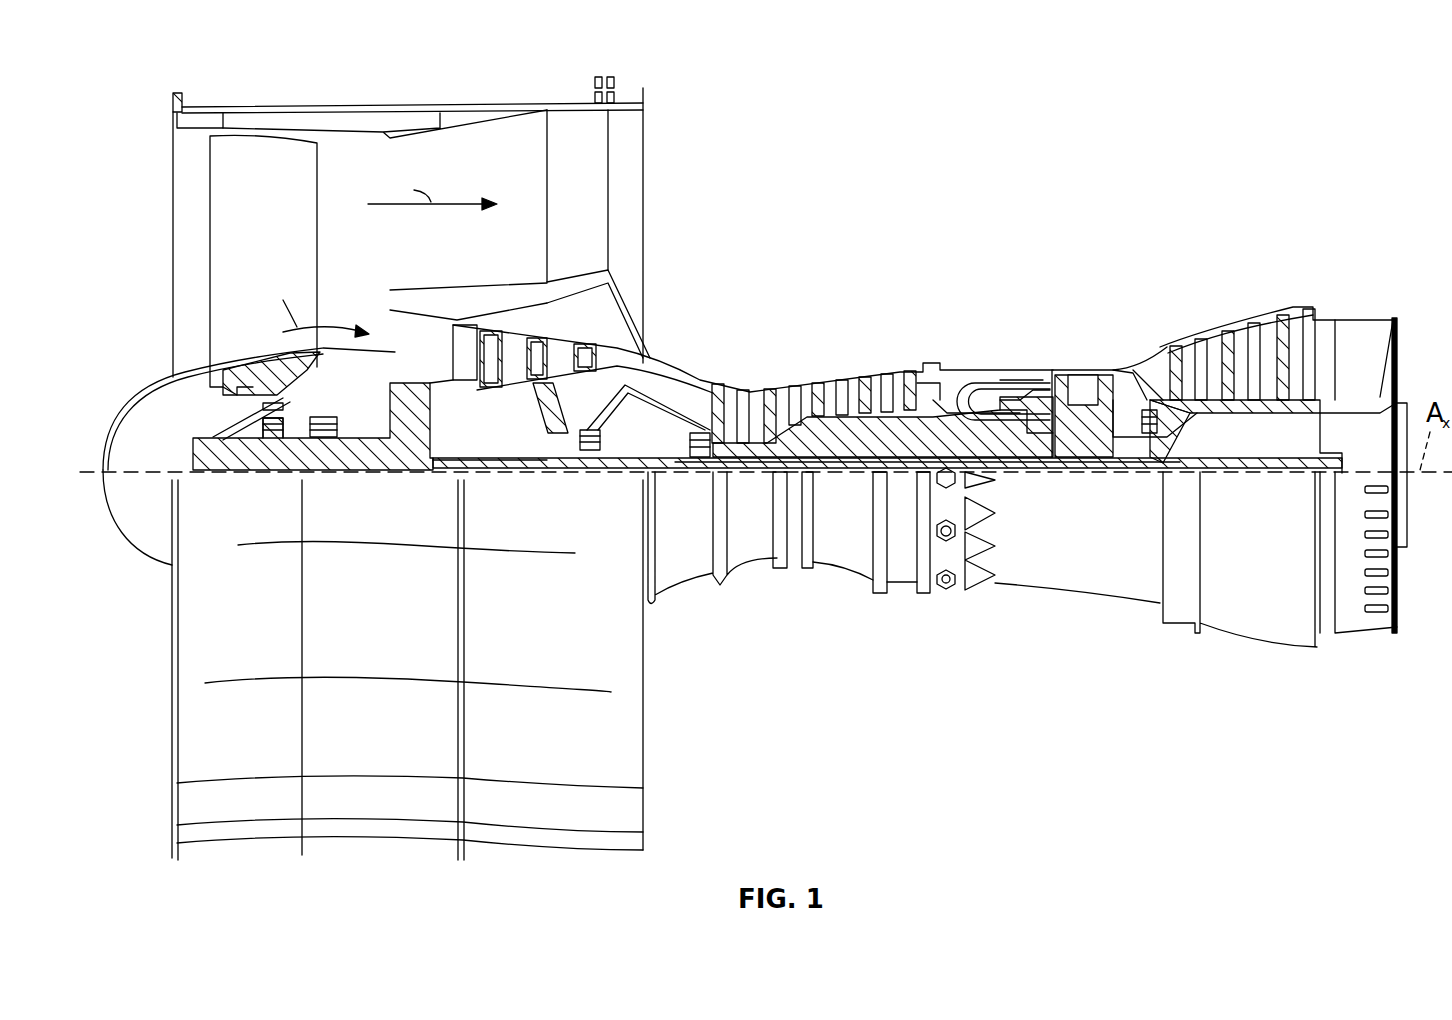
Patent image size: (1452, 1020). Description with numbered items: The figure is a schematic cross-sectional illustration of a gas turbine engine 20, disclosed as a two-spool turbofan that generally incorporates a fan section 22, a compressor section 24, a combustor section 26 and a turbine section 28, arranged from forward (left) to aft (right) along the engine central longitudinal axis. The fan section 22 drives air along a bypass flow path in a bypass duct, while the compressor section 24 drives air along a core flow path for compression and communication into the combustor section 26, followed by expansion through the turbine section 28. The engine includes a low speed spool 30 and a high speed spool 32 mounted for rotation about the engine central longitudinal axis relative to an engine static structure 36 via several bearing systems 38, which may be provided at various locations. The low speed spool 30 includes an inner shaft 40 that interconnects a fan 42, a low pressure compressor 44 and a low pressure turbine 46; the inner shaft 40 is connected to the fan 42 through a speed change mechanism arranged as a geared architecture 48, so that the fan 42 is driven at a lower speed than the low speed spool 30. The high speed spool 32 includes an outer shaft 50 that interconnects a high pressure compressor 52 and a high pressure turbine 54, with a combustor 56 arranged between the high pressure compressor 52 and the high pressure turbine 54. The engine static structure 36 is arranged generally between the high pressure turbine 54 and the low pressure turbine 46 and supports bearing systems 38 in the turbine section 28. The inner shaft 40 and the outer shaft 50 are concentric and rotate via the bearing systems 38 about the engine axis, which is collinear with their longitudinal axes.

The gas turbine engine 20 is at (1213, 146).
The fan section 22 is at (322, 80).
The compressor section 24 is at (832, 330).
The combustor section 26 is at (1001, 331).
The turbine section 28 is at (1146, 311).
The low speed spool 30 is at (863, 475).
The high speed spool 32 is at (913, 413).
The engine static structure 36 is at (903, 590).
The bearing systems 38 is at (277, 440).
The inner shaft 40 is at (662, 465).
The fan 42 is at (286, 228).
The low pressure compressor 44 is at (560, 350).
The low pressure turbine 46 is at (1250, 318).
The geared architecture 48 is at (413, 440).
The outer shaft 50 is at (1023, 450).
The high pressure compressor 52 is at (797, 393).
The high pressure turbine 54 is at (1083, 368).
The combustor 56 is at (1007, 390).